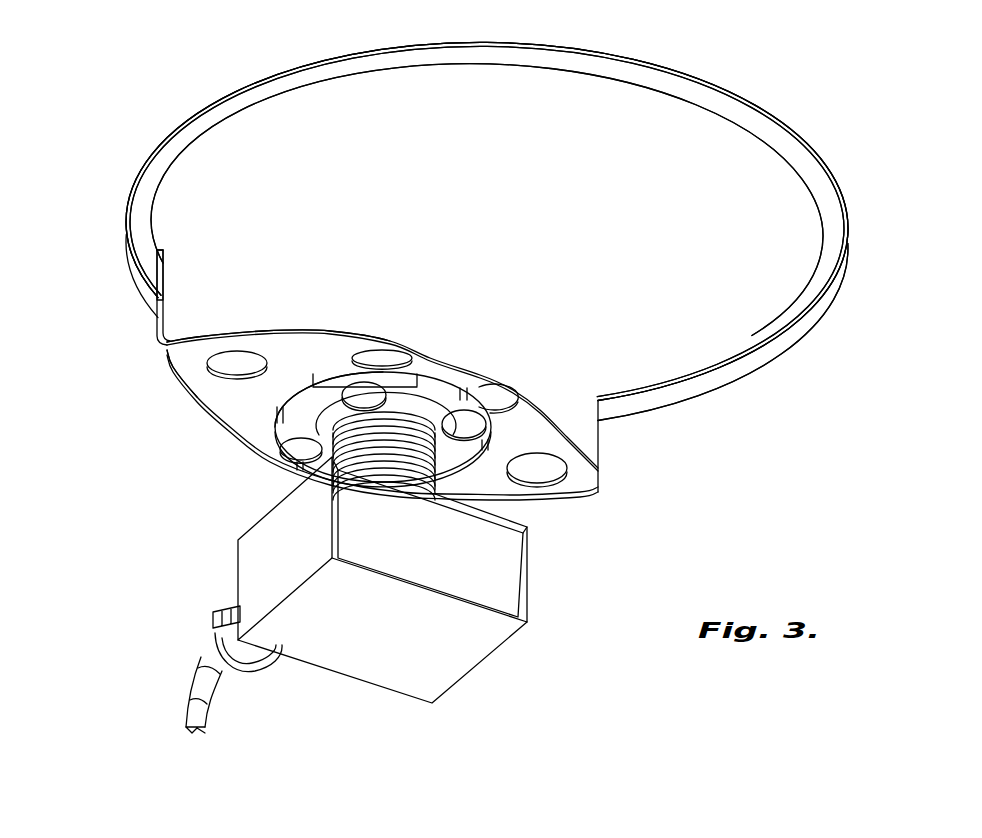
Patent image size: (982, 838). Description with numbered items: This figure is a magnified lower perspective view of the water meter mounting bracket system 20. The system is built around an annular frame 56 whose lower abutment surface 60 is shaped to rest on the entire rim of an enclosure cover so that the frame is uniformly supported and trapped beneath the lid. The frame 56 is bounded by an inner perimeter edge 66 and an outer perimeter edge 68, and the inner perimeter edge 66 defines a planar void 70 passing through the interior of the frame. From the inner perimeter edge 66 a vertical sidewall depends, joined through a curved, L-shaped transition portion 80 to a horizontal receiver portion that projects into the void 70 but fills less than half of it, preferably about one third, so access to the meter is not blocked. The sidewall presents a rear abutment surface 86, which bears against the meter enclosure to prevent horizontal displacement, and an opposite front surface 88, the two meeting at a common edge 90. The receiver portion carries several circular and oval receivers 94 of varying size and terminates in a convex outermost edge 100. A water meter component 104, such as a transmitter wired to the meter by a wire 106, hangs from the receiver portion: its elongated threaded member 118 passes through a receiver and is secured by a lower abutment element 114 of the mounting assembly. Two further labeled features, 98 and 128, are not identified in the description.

The water meter mounting bracket system 20 is at (742, 78).
The annular frame 56 is at (394, 48).
The lower abutment surface 60 is at (268, 97).
The inner perimeter edge 66 is at (335, 84).
The outer perimeter edge 68 is at (471, 44).
The planar void 70 is at (746, 318).
The transition portion 80 is at (158, 346).
The rear abutment surface 86 is at (155, 330).
The front surface 88 is at (180, 312).
The common edge 90 is at (166, 266).
The receivers 94 is at (245, 368).
The bracket bend 98 is at (190, 358).
The outermost edge 100 is at (368, 401).
The water meter component 104 is at (496, 655).
The wire 106 is at (197, 683).
The lower abutment element 114 is at (307, 418).
The elongated threaded member 118 is at (418, 465).
The collar opening 128 is at (295, 402).